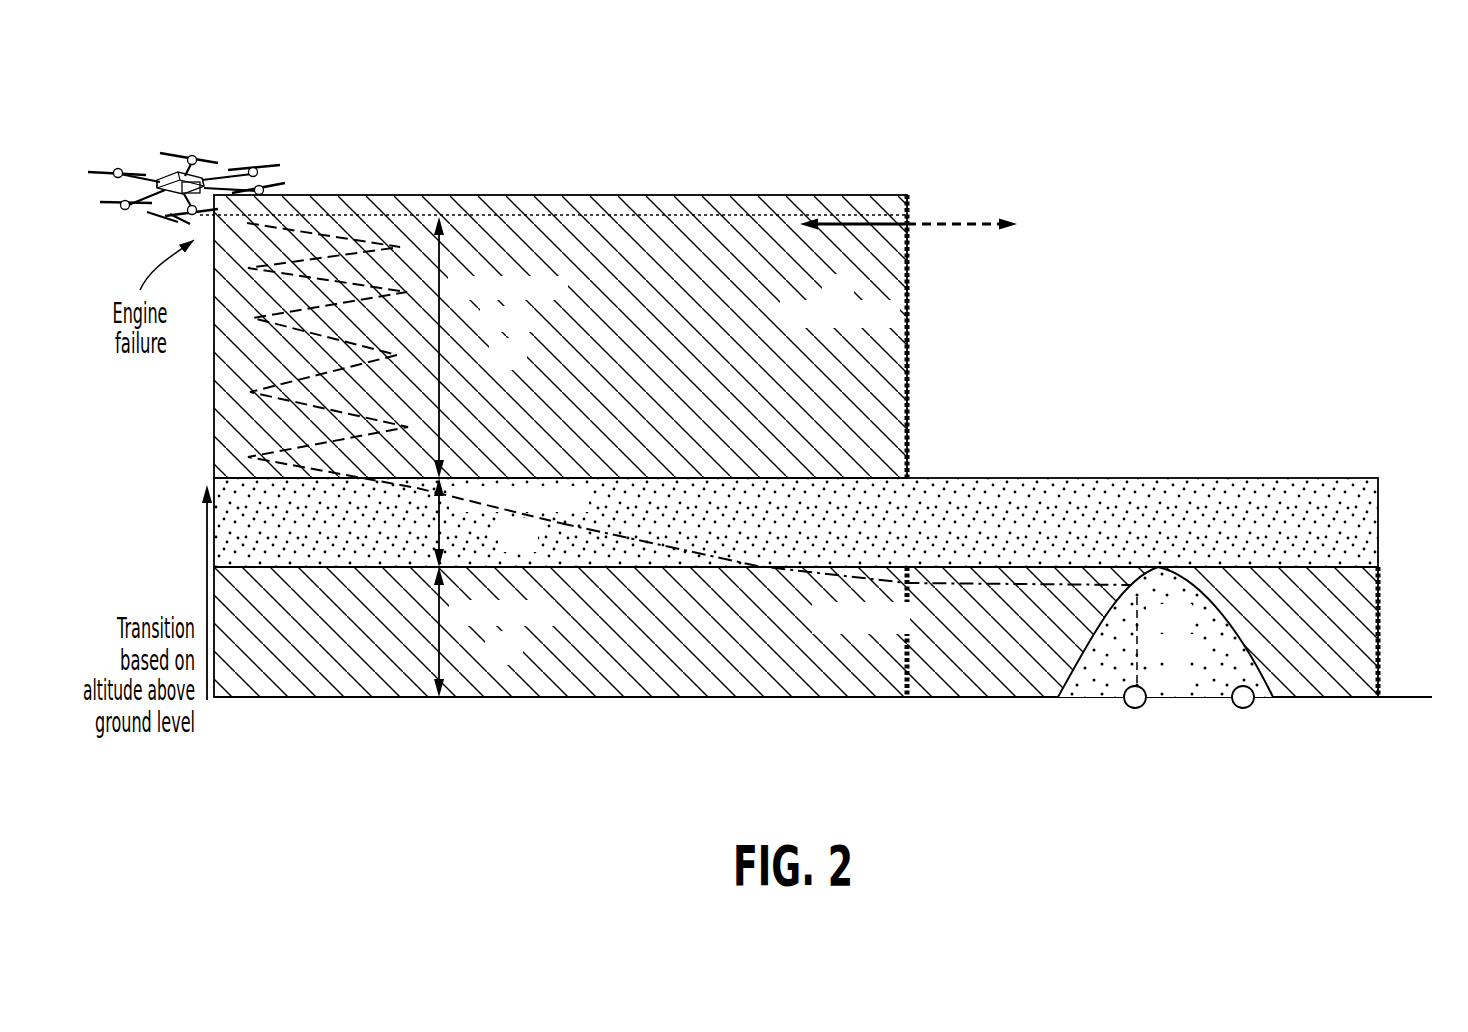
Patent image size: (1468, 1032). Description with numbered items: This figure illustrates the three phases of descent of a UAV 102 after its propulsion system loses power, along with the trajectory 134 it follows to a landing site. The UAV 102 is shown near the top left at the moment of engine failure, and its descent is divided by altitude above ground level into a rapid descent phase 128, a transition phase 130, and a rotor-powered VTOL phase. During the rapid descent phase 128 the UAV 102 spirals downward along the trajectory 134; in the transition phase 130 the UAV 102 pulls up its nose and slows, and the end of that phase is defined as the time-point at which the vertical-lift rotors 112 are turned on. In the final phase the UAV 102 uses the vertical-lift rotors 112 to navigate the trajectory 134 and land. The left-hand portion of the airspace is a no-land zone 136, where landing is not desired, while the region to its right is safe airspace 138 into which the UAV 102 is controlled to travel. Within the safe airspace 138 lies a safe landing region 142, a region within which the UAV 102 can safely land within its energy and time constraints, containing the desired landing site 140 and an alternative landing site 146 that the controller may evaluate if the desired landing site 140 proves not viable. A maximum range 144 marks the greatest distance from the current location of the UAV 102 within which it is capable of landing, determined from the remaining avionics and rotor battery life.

The UAV 102 is at (186, 144).
The vertical-lift rotors 112 is at (214, 147).
The rapid descent phase 128 is at (493, 367).
The transition phase 130 is at (502, 549).
The trajectory 134 is at (603, 530).
The no-land zone 136 is at (855, 227).
The safe airspace 138 is at (955, 227).
The desired landing site 140 is at (1134, 712).
The safe landing region 142 is at (1158, 590).
The maximum range 144 is at (1386, 580).
The landing site 146 is at (1242, 712).